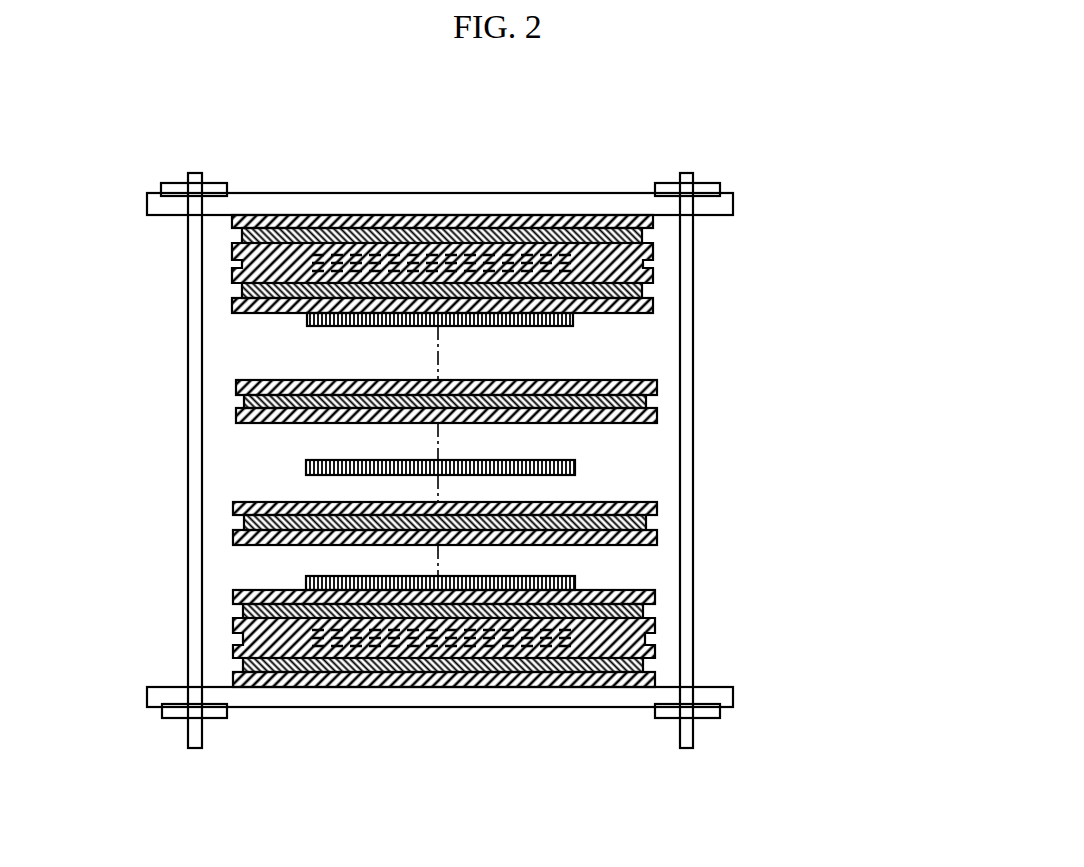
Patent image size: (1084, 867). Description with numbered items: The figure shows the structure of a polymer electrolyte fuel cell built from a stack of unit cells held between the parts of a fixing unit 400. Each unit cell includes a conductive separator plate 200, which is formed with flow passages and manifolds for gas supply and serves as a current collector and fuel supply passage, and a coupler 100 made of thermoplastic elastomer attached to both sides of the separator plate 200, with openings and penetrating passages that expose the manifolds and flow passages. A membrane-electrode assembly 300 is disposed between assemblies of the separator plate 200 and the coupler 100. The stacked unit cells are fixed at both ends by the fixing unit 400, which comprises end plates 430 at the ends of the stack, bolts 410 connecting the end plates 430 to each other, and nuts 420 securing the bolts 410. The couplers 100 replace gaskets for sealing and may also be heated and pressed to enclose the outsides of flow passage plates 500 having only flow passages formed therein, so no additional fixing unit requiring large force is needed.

The coupler 100 is at (657, 382).
The conductive separator plate 200 is at (242, 290).
The membrane-electrode assembly 300 is at (623, 262).
The fixing unit 400 is at (556, 449).
The bolt 410 is at (693, 243).
The nut 420 is at (720, 188).
The end plate 430 is at (733, 205).
The flow passage plate 500 is at (461, 451).